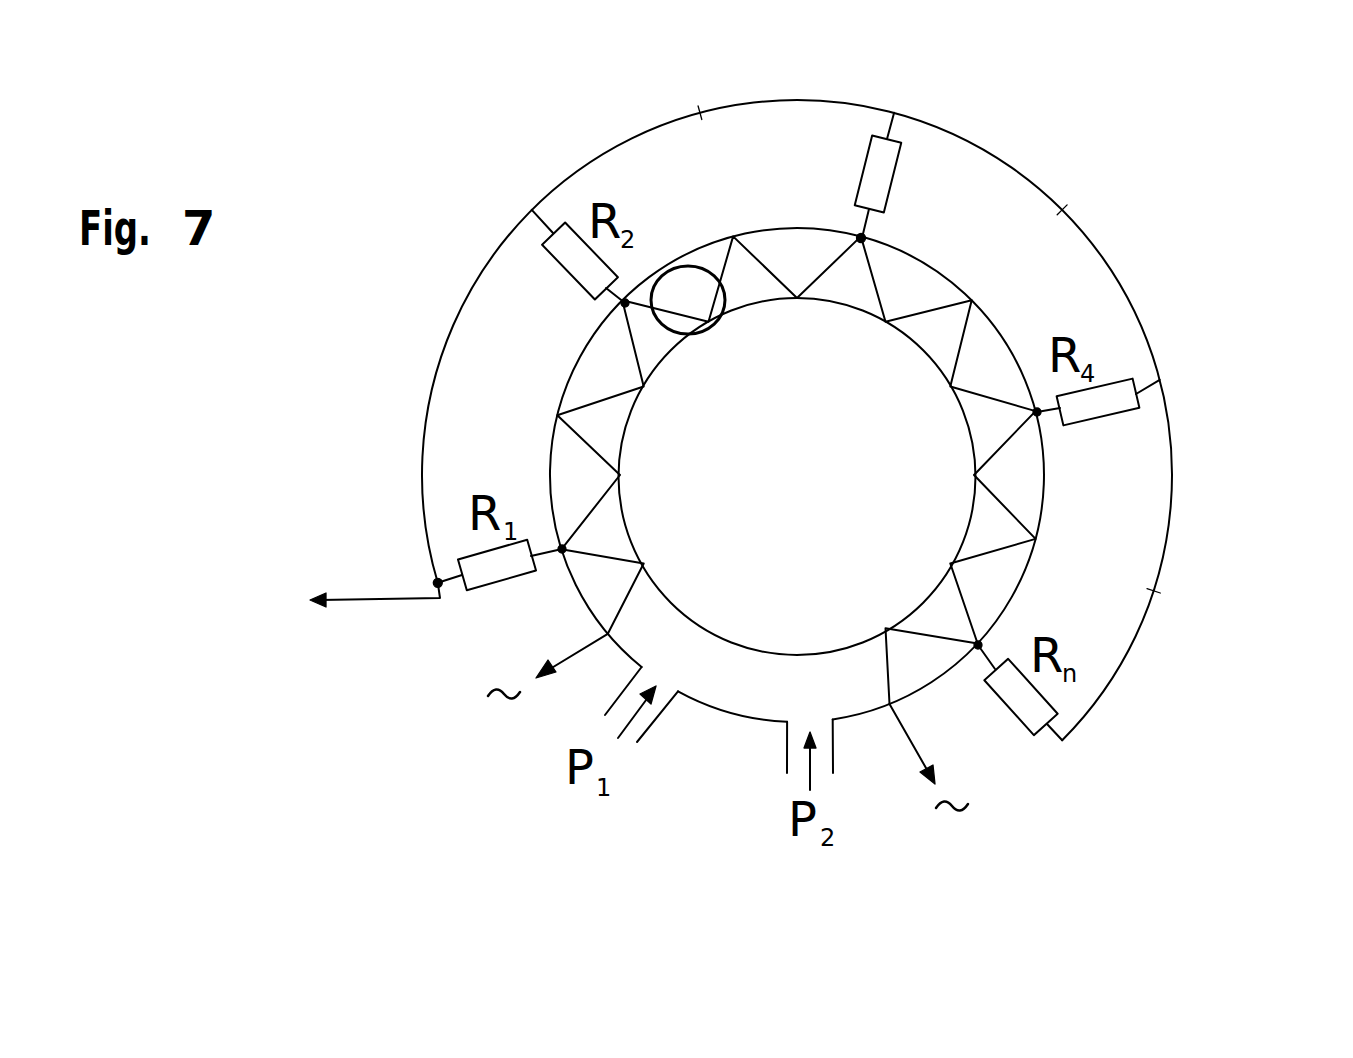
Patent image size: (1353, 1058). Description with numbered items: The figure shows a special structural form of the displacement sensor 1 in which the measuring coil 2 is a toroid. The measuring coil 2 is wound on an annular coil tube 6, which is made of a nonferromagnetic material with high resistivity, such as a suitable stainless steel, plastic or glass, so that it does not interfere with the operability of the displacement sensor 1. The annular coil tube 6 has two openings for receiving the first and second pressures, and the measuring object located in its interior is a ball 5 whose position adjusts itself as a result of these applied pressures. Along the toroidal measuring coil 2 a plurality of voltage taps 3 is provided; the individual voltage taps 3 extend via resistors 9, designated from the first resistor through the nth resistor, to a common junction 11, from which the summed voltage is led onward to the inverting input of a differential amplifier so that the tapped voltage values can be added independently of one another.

The displacement sensor 1 is at (1188, 662).
The measuring coil 2 is at (1012, 512).
The voltage taps 3 is at (862, 238).
The ball 5 is at (690, 292).
The coil tube 6 is at (570, 380).
The resistors 9 is at (872, 175).
The junction 11 is at (352, 604).